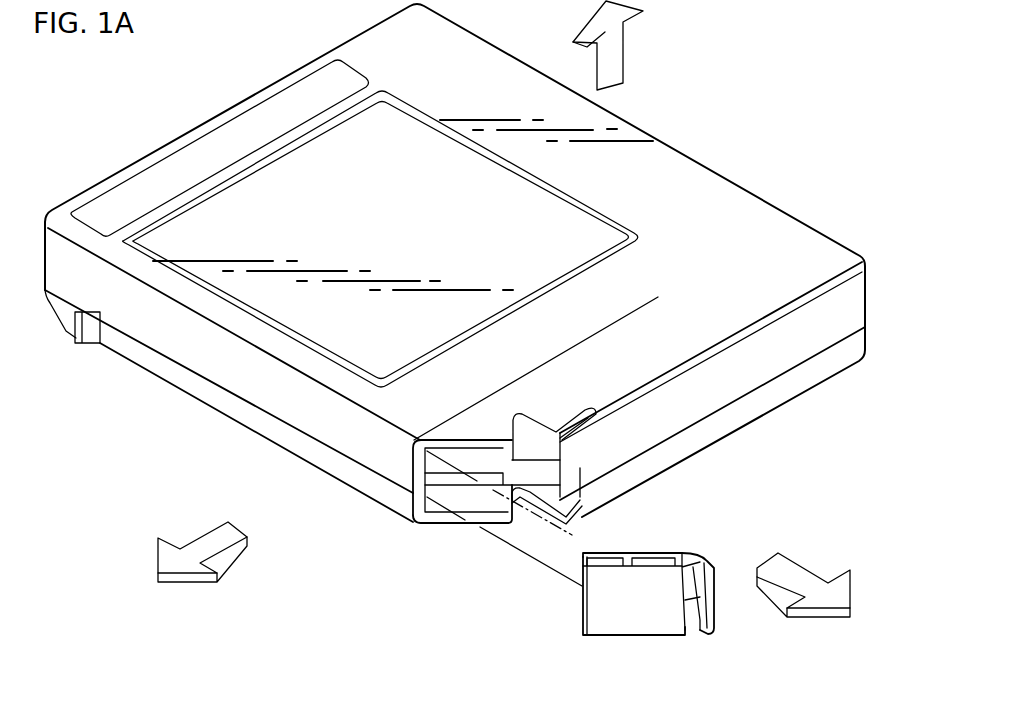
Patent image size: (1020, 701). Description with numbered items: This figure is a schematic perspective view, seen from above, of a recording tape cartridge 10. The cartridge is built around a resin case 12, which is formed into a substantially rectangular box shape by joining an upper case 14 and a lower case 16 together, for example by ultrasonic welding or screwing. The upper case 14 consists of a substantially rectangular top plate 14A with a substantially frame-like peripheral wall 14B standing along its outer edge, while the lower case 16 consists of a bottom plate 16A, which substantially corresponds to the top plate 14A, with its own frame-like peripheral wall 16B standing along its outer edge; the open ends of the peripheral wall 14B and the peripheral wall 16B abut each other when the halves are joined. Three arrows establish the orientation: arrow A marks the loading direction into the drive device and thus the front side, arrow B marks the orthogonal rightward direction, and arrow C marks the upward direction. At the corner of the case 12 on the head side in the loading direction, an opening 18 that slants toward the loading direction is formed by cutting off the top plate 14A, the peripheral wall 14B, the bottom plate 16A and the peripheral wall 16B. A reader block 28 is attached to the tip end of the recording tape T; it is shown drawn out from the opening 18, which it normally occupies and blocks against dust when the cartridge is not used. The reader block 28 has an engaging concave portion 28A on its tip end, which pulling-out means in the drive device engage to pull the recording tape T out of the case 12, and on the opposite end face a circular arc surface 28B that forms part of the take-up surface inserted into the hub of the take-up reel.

The recording tape cartridge 10 is at (455, 313).
The case 12 is at (455, 405).
The upper case 14 is at (455, 395).
The top plate 14A is at (742, 210).
The peripheral wall 14B is at (290, 406).
The lower case 16 is at (428, 405).
The bottom plate 16A is at (437, 515).
The peripheral wall 16B is at (326, 462).
The opening 18 is at (498, 462).
The reader block 28 is at (674, 596).
The engaging concave portion 28A is at (693, 620).
The circular arc surface 28B is at (586, 566).
The arrow A is at (793, 570).
The arrow B is at (212, 538).
The arrow C is at (617, 58).
The recording tape T is at (556, 546).